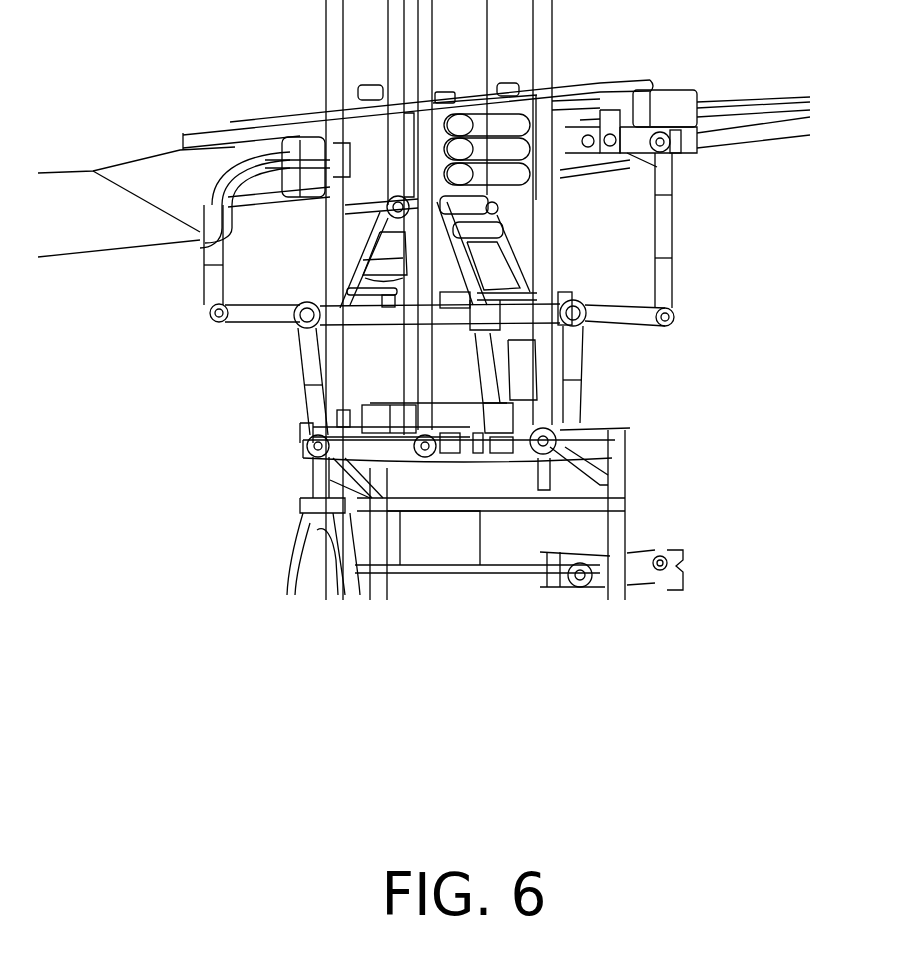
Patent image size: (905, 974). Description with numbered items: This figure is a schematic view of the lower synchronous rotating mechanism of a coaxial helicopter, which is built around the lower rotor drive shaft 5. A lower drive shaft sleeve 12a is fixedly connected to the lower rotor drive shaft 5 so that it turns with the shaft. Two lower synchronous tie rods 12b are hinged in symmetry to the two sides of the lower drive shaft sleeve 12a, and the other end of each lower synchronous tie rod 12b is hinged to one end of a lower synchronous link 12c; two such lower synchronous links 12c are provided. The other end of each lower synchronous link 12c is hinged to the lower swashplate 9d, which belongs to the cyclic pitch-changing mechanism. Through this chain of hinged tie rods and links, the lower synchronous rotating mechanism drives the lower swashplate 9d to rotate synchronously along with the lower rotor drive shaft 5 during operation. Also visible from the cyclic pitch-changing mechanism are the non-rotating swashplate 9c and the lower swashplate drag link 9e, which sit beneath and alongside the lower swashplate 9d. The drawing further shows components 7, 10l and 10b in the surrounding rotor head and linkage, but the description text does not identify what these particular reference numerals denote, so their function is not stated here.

The rotor blade 7 is at (212, 123).
The lower drive shaft sleeve 12a is at (385, 212).
The lower synchronous tie rod 12b is at (500, 217).
The lower rotor drive shaft 5 is at (357, 283).
The vertical link 10l is at (663, 237).
The horizontal link 10b is at (640, 313).
The lower swashplate drag link 9e is at (307, 370).
The lower synchronous link 12c is at (505, 367).
The lower swashplate 9d is at (407, 423).
The non-rotating swashplate 9c is at (473, 483).